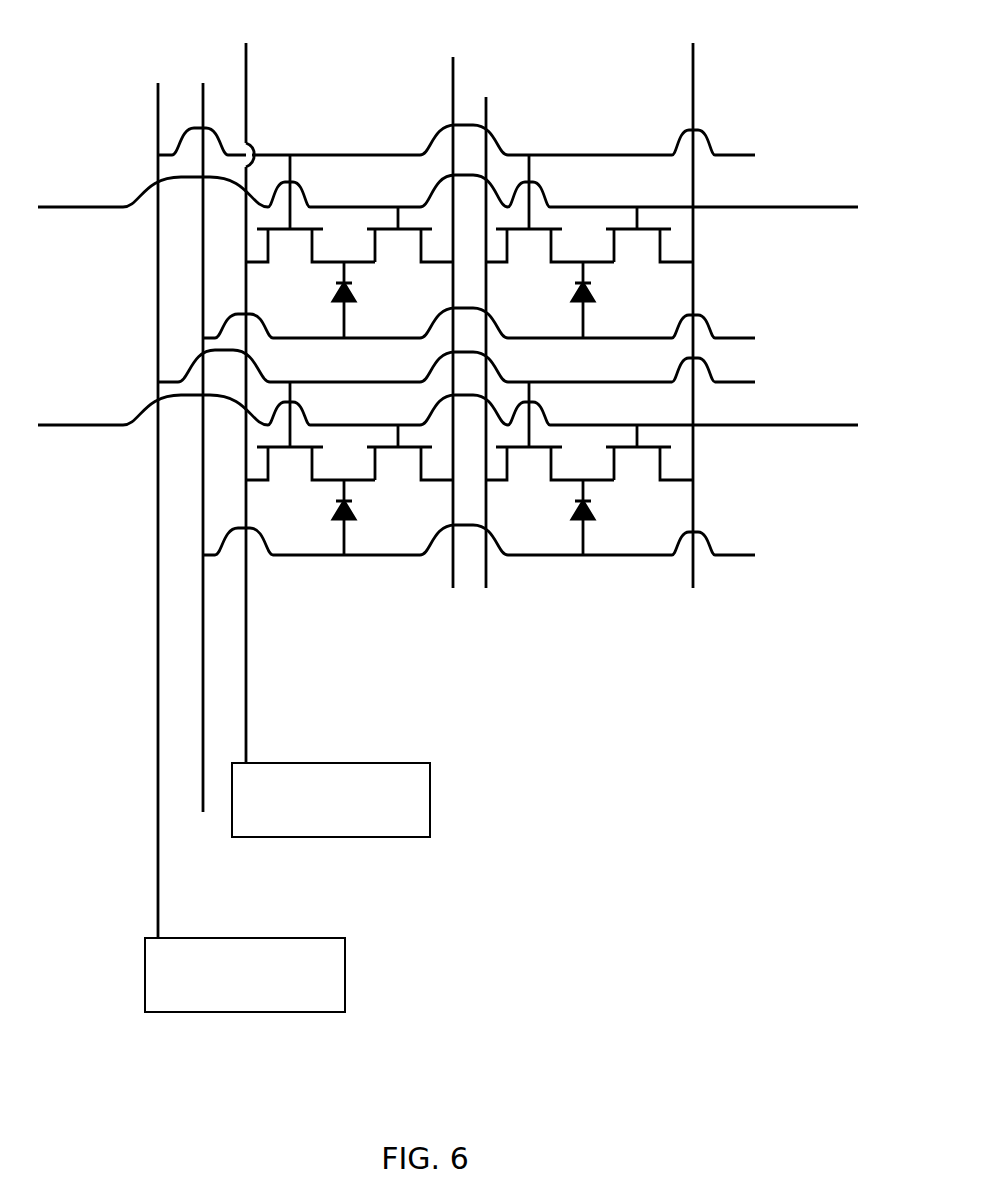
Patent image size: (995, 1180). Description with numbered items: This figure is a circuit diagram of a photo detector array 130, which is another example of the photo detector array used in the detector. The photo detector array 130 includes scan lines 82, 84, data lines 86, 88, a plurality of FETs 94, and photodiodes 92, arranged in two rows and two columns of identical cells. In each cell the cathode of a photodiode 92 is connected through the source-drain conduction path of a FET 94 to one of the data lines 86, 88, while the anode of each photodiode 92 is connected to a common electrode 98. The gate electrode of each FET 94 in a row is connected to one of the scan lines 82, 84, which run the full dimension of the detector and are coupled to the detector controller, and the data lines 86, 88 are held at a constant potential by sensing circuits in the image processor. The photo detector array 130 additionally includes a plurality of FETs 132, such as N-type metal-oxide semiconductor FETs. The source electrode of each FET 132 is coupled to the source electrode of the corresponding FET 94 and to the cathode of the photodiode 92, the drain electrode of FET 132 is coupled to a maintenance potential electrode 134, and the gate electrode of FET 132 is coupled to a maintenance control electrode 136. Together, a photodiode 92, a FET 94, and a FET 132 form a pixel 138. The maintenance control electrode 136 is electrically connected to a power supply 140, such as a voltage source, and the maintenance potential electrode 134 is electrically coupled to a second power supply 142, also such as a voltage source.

The photo detector array 130 is at (708, 688).
The scan line 82 is at (788, 207).
The scan line 84 is at (788, 425).
The data line 86 is at (453, 67).
The data line 88 is at (693, 67).
The photodiode 92 is at (355, 305).
The FET 94 is at (398, 250).
The common electrode 98 is at (203, 100).
The FET 132 is at (288, 263).
The maintenance potential electrode 134 is at (246, 65).
The maintenance control electrode 136 is at (158, 289).
The pixel 138 is at (350, 141).
The power supply 140 is at (310, 938).
The power supply 142 is at (395, 763).